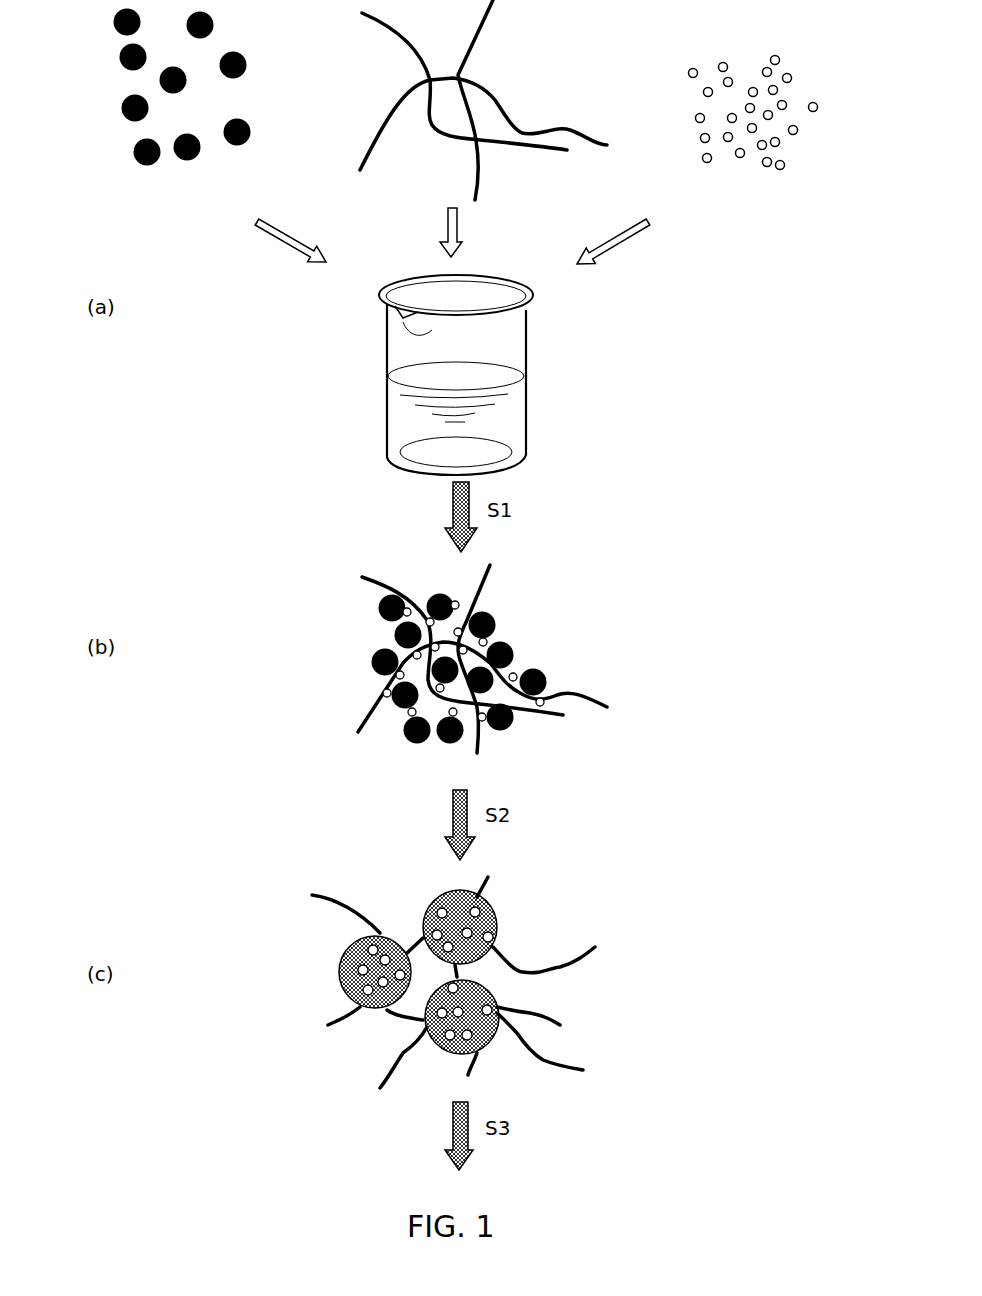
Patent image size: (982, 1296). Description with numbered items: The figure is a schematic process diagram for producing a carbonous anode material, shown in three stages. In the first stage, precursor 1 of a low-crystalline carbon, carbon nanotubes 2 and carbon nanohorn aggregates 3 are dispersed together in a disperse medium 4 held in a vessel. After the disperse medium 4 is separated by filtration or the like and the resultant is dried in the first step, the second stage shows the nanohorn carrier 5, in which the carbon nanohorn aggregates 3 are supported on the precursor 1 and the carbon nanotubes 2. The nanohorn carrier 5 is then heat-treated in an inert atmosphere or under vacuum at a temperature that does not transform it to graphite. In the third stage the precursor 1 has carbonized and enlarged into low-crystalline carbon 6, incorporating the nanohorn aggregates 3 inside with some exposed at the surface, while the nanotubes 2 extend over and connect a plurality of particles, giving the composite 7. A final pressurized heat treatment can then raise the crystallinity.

The precursor of a low-crystalline carbon 1 is at (139, 166).
The carbon nanotubes 2 is at (436, 138).
The carbon nanohorn aggregates 3 is at (705, 173).
The disperse medium 4 is at (512, 426).
The nanohorn carrier 5 is at (560, 655).
The low-crystalline carbon 6 is at (498, 905).
The composite 7 is at (526, 982).